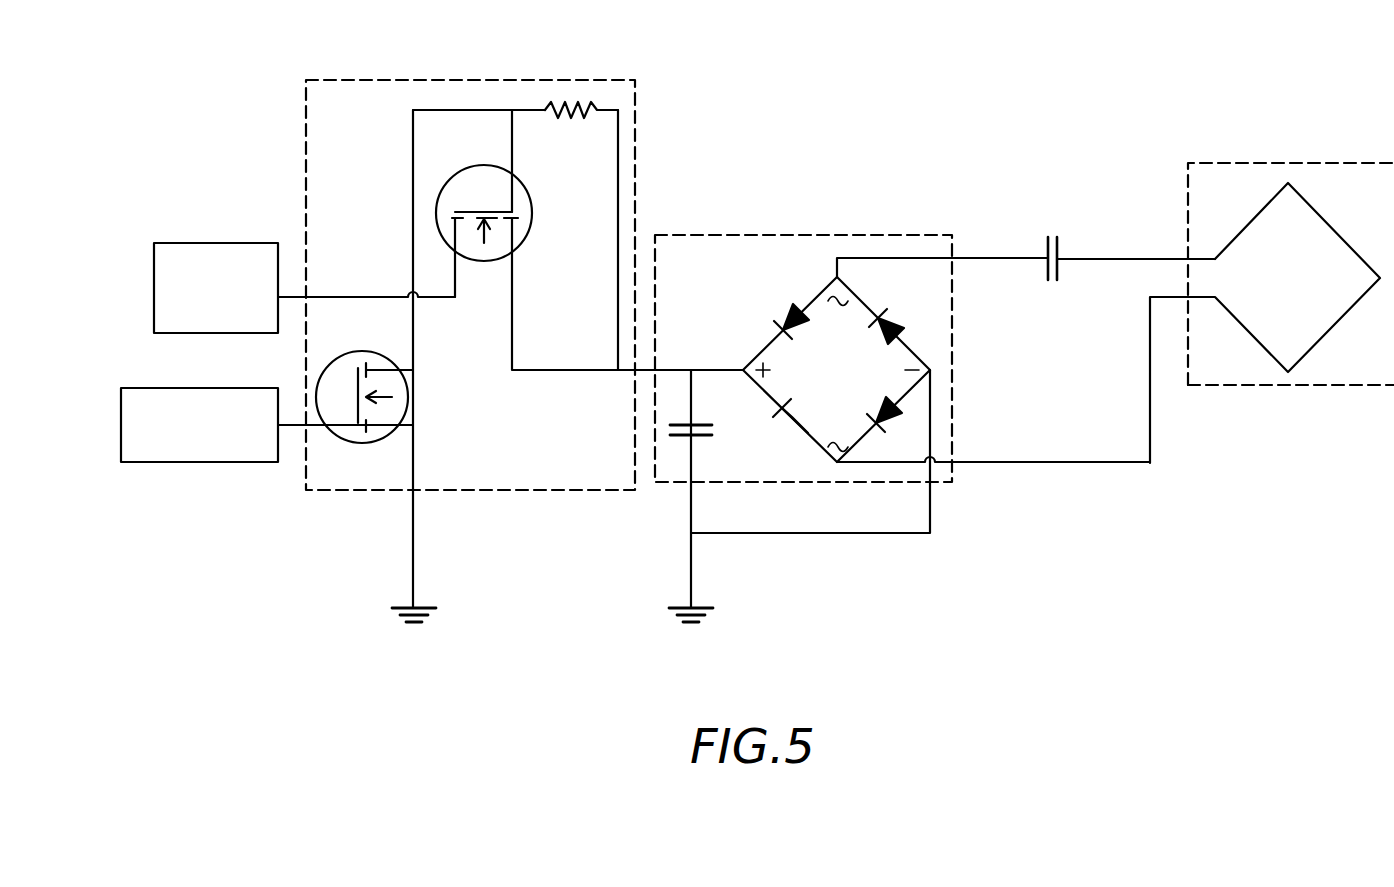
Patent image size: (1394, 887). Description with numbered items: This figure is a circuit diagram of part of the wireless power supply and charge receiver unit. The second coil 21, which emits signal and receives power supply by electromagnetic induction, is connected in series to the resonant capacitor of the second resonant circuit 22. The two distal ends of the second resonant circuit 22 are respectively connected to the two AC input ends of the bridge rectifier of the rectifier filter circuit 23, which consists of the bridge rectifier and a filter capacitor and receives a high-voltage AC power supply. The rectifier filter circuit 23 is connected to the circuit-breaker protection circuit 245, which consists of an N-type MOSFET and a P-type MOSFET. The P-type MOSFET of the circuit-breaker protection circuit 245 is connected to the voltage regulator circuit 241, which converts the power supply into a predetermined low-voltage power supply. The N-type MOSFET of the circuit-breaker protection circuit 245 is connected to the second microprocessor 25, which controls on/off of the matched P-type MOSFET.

The second coil 21 is at (1252, 163).
The second resonant circuit 22 is at (1047, 226).
The rectifier filter circuit 23 is at (733, 235).
The voltage regulator circuit 241 is at (215, 243).
The circuit-breaker protection circuit 245 is at (390, 80).
The second microprocessor 25 is at (216, 388).